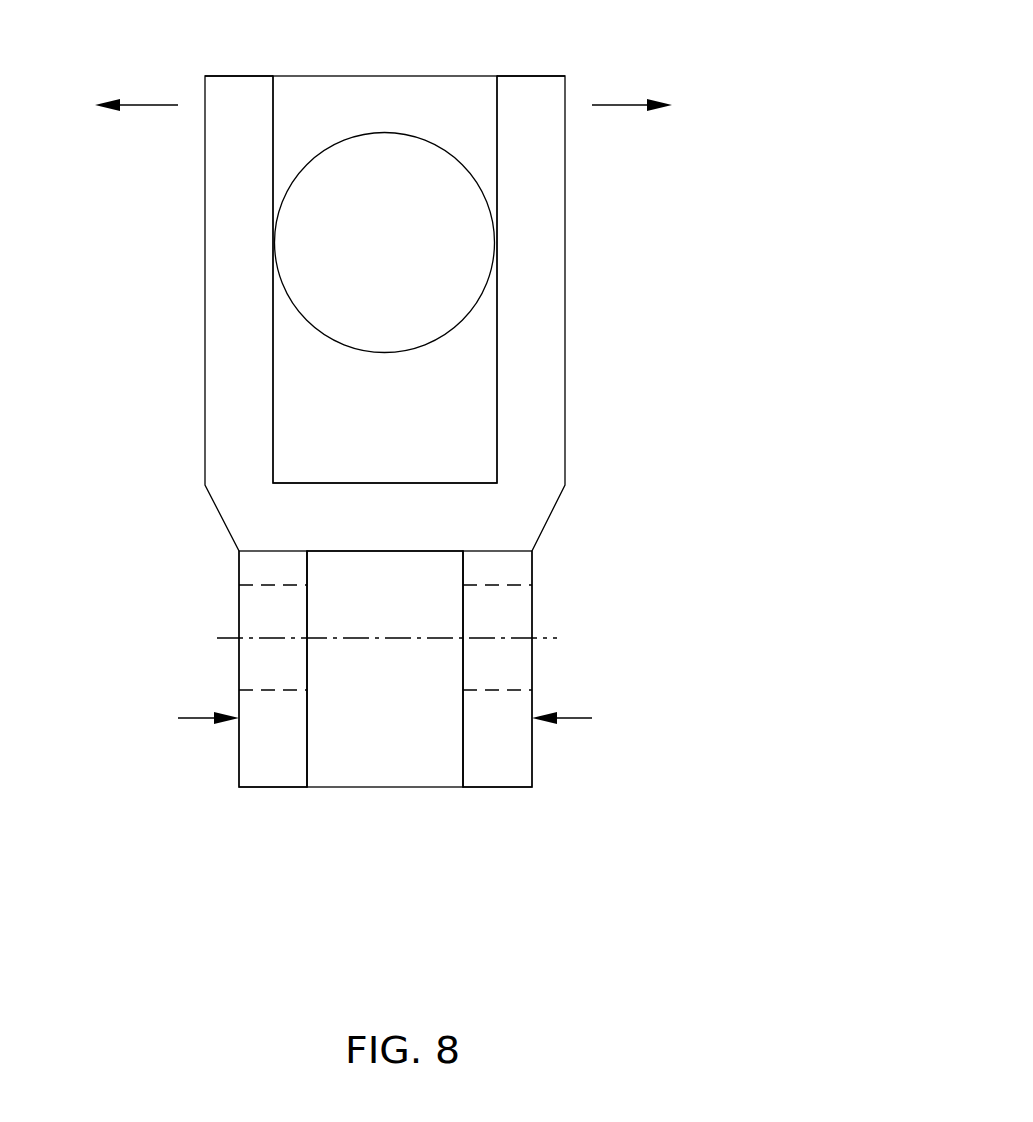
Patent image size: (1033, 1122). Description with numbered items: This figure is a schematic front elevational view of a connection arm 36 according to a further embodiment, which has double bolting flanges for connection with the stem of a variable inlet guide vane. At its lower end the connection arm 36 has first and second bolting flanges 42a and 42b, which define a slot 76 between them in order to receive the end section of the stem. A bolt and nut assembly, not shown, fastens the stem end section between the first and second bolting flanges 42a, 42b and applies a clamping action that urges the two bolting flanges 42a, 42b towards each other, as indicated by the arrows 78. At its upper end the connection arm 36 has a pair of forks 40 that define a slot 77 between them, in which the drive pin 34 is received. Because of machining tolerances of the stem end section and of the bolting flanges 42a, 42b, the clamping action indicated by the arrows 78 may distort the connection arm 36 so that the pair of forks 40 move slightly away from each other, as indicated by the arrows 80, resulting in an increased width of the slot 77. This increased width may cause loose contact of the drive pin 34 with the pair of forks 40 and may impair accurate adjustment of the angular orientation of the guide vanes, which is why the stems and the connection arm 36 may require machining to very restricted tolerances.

The drive pin 34 is at (337, 143).
The connection arm 36 is at (638, 340).
The pair of forks 40 is at (233, 76).
The first bolting flange 42a is at (250, 760).
The second bolting flange 42b is at (523, 769).
The slot 76 is at (402, 689).
The slot 77 is at (402, 448).
The arrows 78 is at (200, 718).
The arrows 80 is at (150, 105).